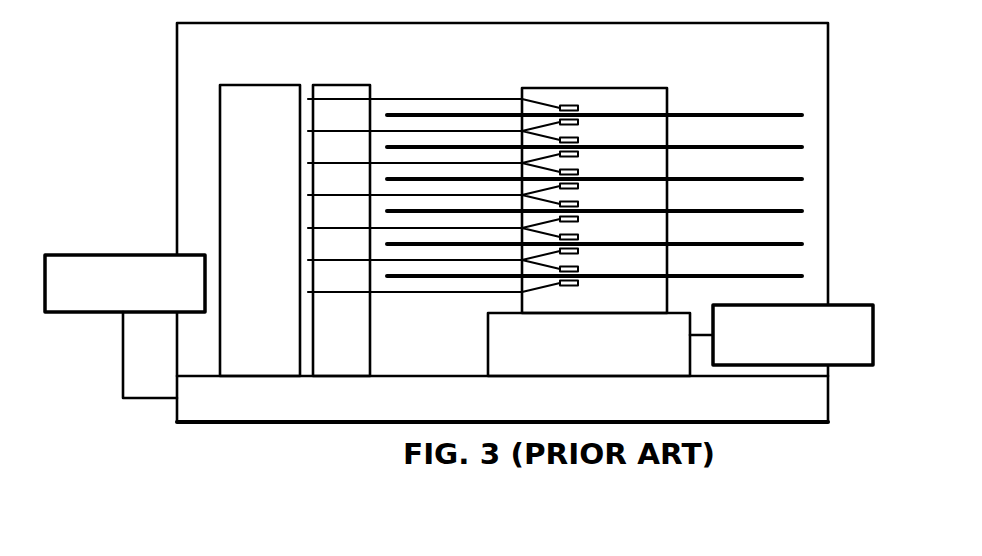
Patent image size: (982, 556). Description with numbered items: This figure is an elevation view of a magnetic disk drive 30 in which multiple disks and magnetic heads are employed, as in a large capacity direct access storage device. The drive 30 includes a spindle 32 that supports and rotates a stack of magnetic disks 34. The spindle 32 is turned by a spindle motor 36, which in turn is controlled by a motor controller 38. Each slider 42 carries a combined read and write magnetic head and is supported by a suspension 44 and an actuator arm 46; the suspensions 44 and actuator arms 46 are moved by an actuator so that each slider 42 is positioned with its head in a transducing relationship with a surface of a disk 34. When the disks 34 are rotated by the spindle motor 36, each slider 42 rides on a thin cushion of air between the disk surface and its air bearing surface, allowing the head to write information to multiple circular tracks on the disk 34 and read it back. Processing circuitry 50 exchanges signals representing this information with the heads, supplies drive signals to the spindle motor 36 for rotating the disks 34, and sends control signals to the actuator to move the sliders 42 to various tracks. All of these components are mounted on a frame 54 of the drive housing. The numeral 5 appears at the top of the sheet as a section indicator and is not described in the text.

The magnetic disk drive 30 is at (720, 86).
The spindle 32 is at (643, 87).
The magnetic disk 34 is at (780, 118).
The spindle motor 36 is at (581, 359).
The motor controller 38 is at (862, 367).
The slider 42 is at (575, 137).
The suspension 44 is at (557, 133).
The actuator arm 46 is at (472, 131).
The processing circuitry 50 is at (100, 255).
The frame 54 is at (292, 377).
The section line 5- 5 is at (678, 23).